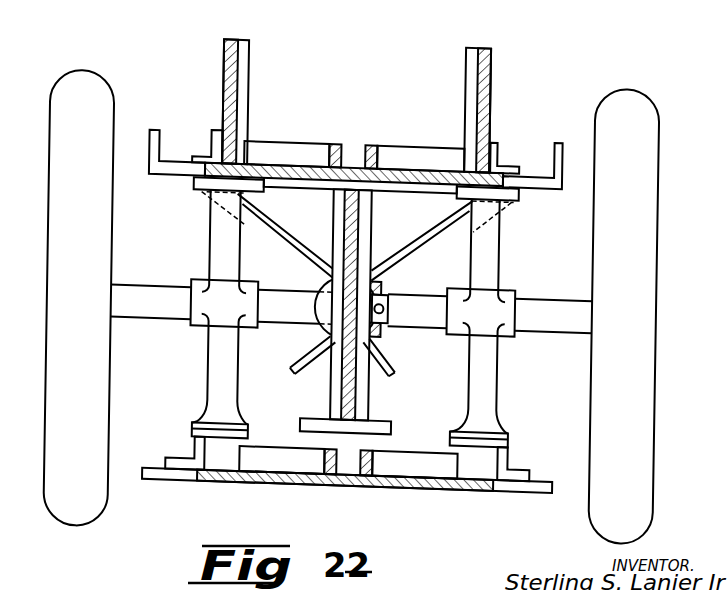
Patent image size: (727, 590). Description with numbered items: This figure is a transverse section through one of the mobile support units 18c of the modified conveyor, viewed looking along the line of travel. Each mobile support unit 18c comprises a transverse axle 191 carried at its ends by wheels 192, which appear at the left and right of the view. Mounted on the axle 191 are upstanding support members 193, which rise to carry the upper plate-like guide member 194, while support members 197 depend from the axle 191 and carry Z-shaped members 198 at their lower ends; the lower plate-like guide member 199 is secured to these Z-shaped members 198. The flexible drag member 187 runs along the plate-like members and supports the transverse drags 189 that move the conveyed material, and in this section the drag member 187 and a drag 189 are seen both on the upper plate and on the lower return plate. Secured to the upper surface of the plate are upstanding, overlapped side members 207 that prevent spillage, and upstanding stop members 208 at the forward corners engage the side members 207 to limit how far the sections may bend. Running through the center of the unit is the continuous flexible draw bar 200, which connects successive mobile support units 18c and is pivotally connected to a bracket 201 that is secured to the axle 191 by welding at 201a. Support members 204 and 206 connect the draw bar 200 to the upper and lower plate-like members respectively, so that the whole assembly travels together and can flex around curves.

The wheels 192 is at (68, 80).
The upstanding stop members 208 is at (178, 90).
The transverse drags 189 is at (332, 100).
The upstanding side members 207 is at (468, 62).
The flexible drag members 187 is at (417, 160).
The plate-like guide members 194 is at (483, 182).
The transverse axles 191 is at (164, 228).
The upstanding support members 193 is at (216, 232).
The support members 204 is at (318, 208).
The continuous flexible draw bar 200 is at (355, 247).
The welding 201a is at (383, 290).
The support member 206 is at (395, 374).
The brackets 201 is at (365, 417).
The support members 197 is at (232, 374).
The Z-shaped members 198 is at (193, 457).
The lower plate-like guide members 199 is at (465, 488).
The mobile support units 18c is at (538, 314).